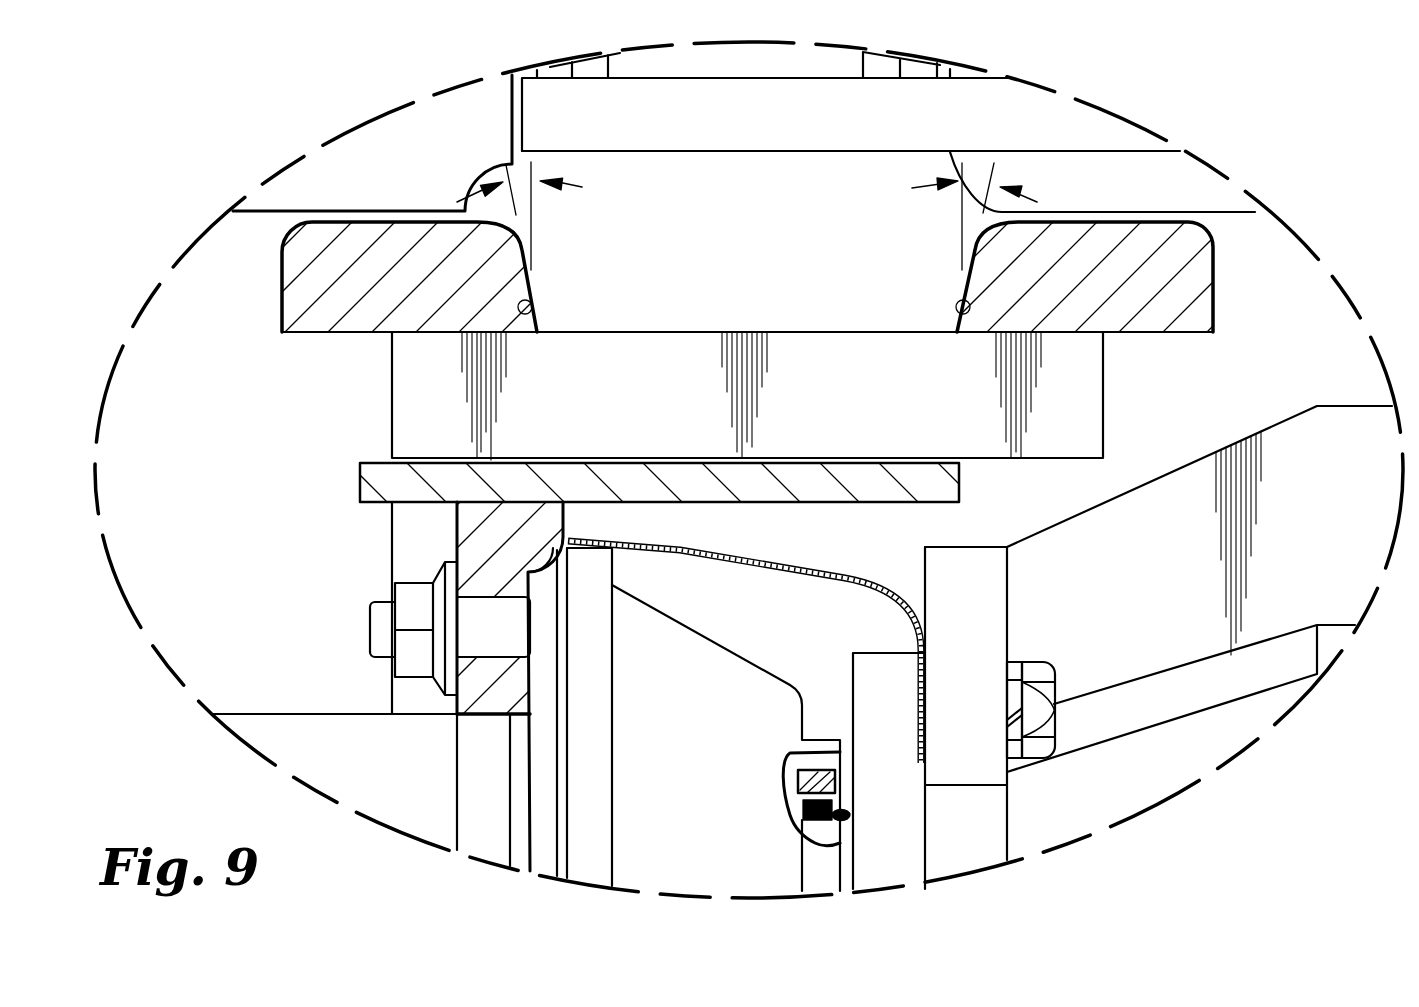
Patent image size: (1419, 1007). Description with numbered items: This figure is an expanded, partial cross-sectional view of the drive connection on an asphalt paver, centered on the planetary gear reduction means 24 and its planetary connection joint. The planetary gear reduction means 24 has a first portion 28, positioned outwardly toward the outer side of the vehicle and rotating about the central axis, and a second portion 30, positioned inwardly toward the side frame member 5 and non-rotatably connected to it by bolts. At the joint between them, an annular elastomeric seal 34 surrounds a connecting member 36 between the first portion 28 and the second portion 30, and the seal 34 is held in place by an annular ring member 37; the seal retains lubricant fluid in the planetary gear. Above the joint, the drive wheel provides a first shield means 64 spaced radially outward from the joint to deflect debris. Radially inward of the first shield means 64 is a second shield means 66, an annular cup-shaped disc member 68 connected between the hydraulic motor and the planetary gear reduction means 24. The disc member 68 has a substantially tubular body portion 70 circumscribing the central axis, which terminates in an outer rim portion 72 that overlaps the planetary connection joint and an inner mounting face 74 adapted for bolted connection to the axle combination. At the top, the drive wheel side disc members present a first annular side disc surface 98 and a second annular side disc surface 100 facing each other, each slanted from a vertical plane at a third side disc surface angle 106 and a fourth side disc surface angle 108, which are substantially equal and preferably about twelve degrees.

The side frame member 5 is at (1327, 512).
The planetary gear reduction means 24 is at (390, 794).
The first portion of planetary gear reduction means 28 is at (668, 813).
The second portion of planetary gear reduction means 30 is at (901, 868).
The annular elastomeric seal 34 is at (848, 815).
The connecting member 36 is at (810, 830).
The annular ring member 37 is at (818, 768).
The first shield means 64 is at (973, 485).
The second shield means 66 is at (811, 557).
The disc member 68 is at (683, 551).
The tubular body portion 70 is at (847, 585).
The outer rim portion 72 is at (588, 537).
The inner mounting face 74 is at (935, 653).
The first annular side disc surface 98 is at (533, 318).
The second annular side disc surface 100 is at (957, 320).
The third side disc surface angle 106 is at (500, 200).
The fourth side disc surface angle 108 is at (978, 178).